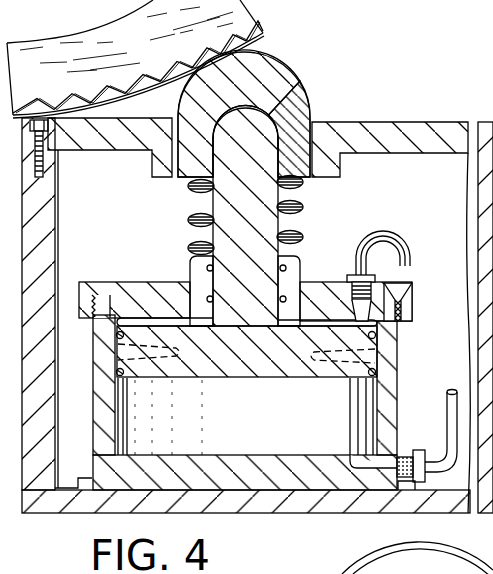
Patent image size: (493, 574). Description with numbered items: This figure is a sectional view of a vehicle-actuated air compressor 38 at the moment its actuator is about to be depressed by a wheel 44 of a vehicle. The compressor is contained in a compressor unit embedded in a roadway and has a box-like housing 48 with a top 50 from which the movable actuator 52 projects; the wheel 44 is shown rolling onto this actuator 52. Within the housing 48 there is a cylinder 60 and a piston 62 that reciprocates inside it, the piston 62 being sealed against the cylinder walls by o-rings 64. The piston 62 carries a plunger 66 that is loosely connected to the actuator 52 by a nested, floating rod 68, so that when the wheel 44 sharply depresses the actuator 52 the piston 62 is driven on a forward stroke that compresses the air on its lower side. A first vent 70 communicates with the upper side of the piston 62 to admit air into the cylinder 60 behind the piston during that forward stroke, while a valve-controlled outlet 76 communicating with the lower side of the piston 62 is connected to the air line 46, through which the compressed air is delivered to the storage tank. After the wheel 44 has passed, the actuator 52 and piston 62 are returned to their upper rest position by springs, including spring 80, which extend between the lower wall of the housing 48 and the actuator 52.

The vehicle-actuated air compressor 38 is at (384, 82).
The wheel 44 is at (100, 31).
The air line 46 is at (447, 392).
The box-like housing 48 is at (45, 514).
The top 50 is at (403, 125).
The actuator 52 is at (274, 56).
The cylinder 60 is at (399, 340).
The piston 62 is at (268, 378).
The o-rings 64 is at (118, 370).
The plunger 66 is at (277, 223).
The floating rod 68 is at (257, 122).
The first vent 70 is at (388, 283).
The valve-controlled outlet 76 is at (383, 462).
The spring 80 is at (190, 224).